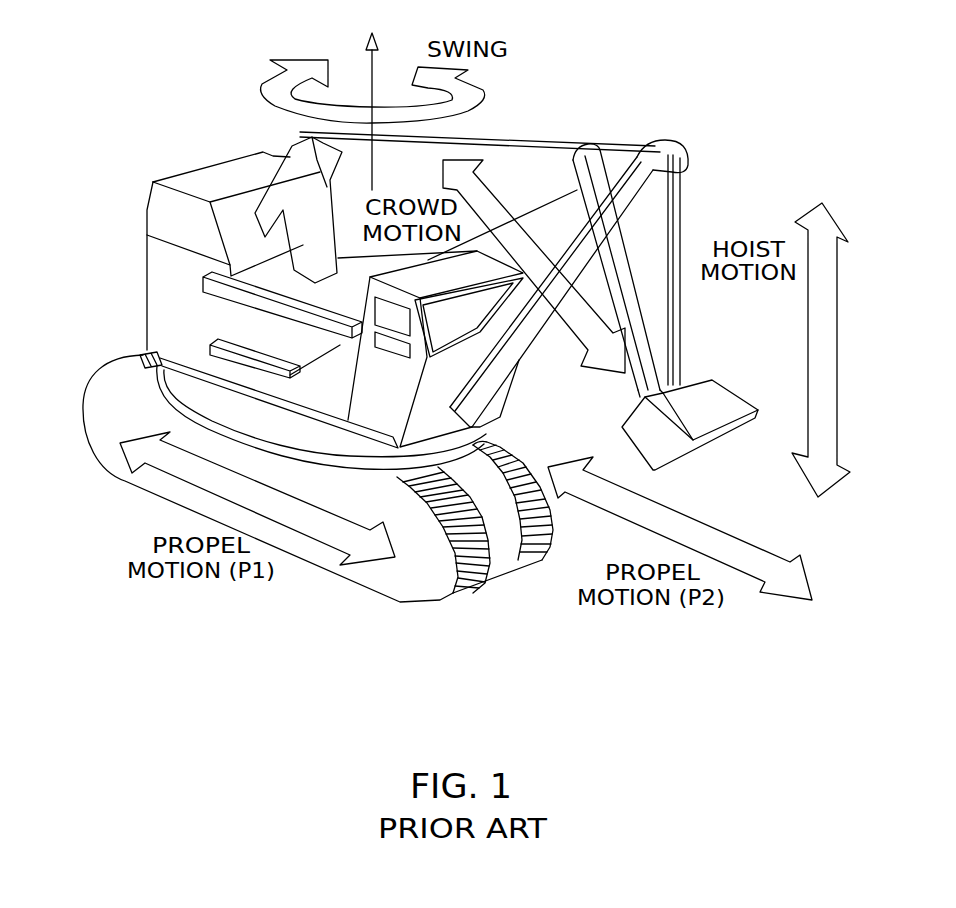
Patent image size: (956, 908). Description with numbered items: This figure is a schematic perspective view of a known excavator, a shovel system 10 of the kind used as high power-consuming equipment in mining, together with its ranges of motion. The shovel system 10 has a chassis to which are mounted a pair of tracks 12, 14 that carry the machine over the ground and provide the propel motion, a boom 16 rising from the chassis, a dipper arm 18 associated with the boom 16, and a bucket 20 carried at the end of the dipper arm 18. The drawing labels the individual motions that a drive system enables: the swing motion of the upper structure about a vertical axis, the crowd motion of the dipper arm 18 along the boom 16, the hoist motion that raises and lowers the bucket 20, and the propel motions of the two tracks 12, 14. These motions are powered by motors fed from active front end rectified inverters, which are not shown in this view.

The shovel system 10 is at (128, 82).
The track 12 is at (410, 573).
The track 14 is at (510, 541).
The boom 16 is at (648, 165).
The dipper arm 18 is at (581, 165).
The bucket 20 is at (712, 407).